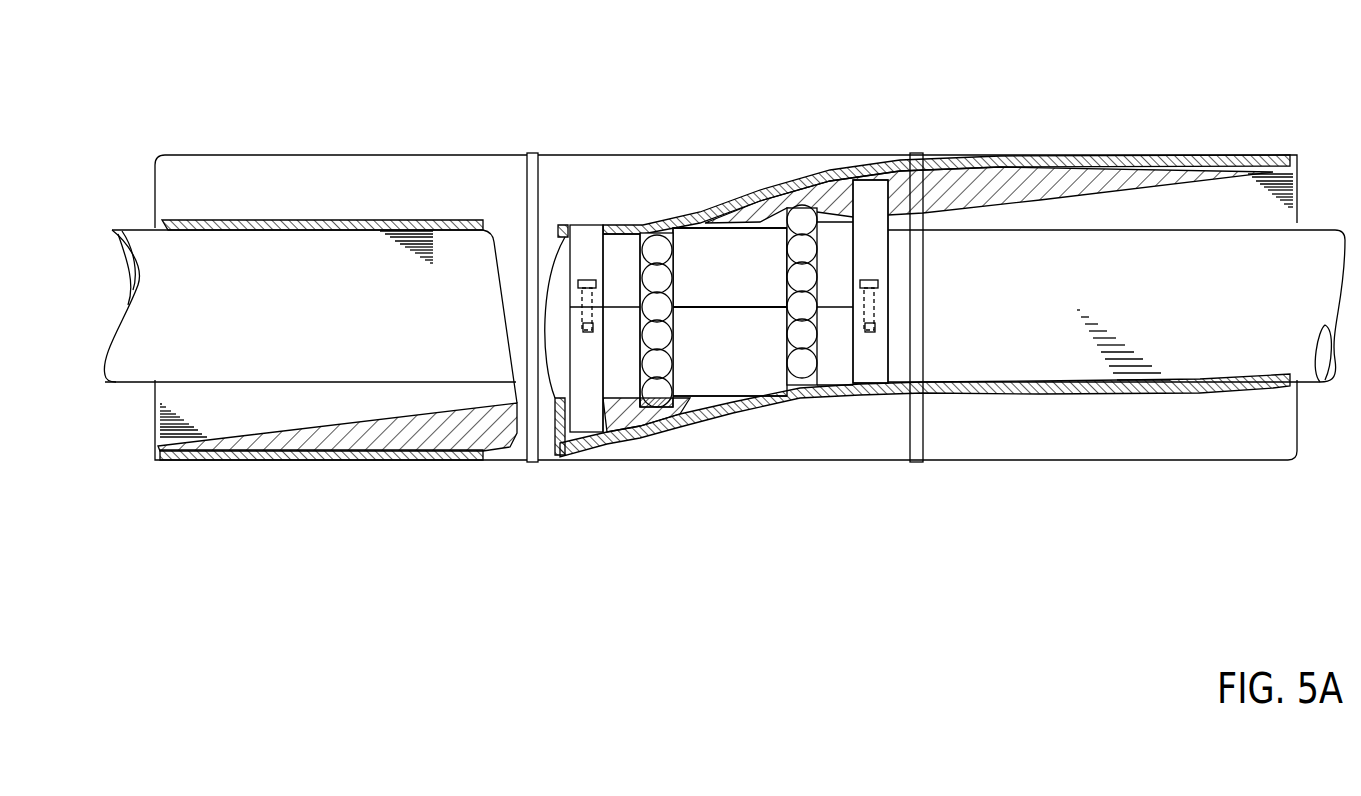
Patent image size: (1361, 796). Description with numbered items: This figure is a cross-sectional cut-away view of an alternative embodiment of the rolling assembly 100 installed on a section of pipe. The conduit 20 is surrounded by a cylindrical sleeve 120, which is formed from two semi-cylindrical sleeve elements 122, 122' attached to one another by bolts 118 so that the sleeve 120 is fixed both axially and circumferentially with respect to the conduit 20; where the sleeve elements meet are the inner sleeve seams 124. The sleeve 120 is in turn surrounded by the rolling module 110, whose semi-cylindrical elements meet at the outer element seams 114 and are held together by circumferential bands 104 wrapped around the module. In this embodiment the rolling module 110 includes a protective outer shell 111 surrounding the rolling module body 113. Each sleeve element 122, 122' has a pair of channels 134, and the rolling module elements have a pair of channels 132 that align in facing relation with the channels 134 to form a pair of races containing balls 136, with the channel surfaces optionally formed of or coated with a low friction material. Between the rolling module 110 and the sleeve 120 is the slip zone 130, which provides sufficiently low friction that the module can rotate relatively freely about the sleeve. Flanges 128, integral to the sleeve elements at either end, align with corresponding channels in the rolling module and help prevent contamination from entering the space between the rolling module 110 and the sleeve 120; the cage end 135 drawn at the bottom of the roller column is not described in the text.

The conduit 20 is at (724, 316).
The rolling assembly 100 is at (815, 93).
The circumferential bands 104 is at (531, 152).
The rolling module 110 is at (730, 143).
The protective outer shell 111 is at (784, 175).
The rolling module body 113 is at (847, 195).
The outer element seams 114 is at (580, 280).
The bolts 118 is at (921, 153).
The cylindrical sleeve 120 is at (741, 243).
The semi-cylindrical sleeve element 122 is at (730, 267).
The semi-cylindrical sleeve element 122' is at (730, 351).
The inner sleeve seams 124 is at (762, 308).
The flanges 128 is at (580, 368).
The slip zone 130 is at (683, 410).
The channels 132 is at (630, 400).
The channels 134 is at (636, 287).
The bearing cage end 135 is at (655, 400).
The balls 136 is at (871, 280).